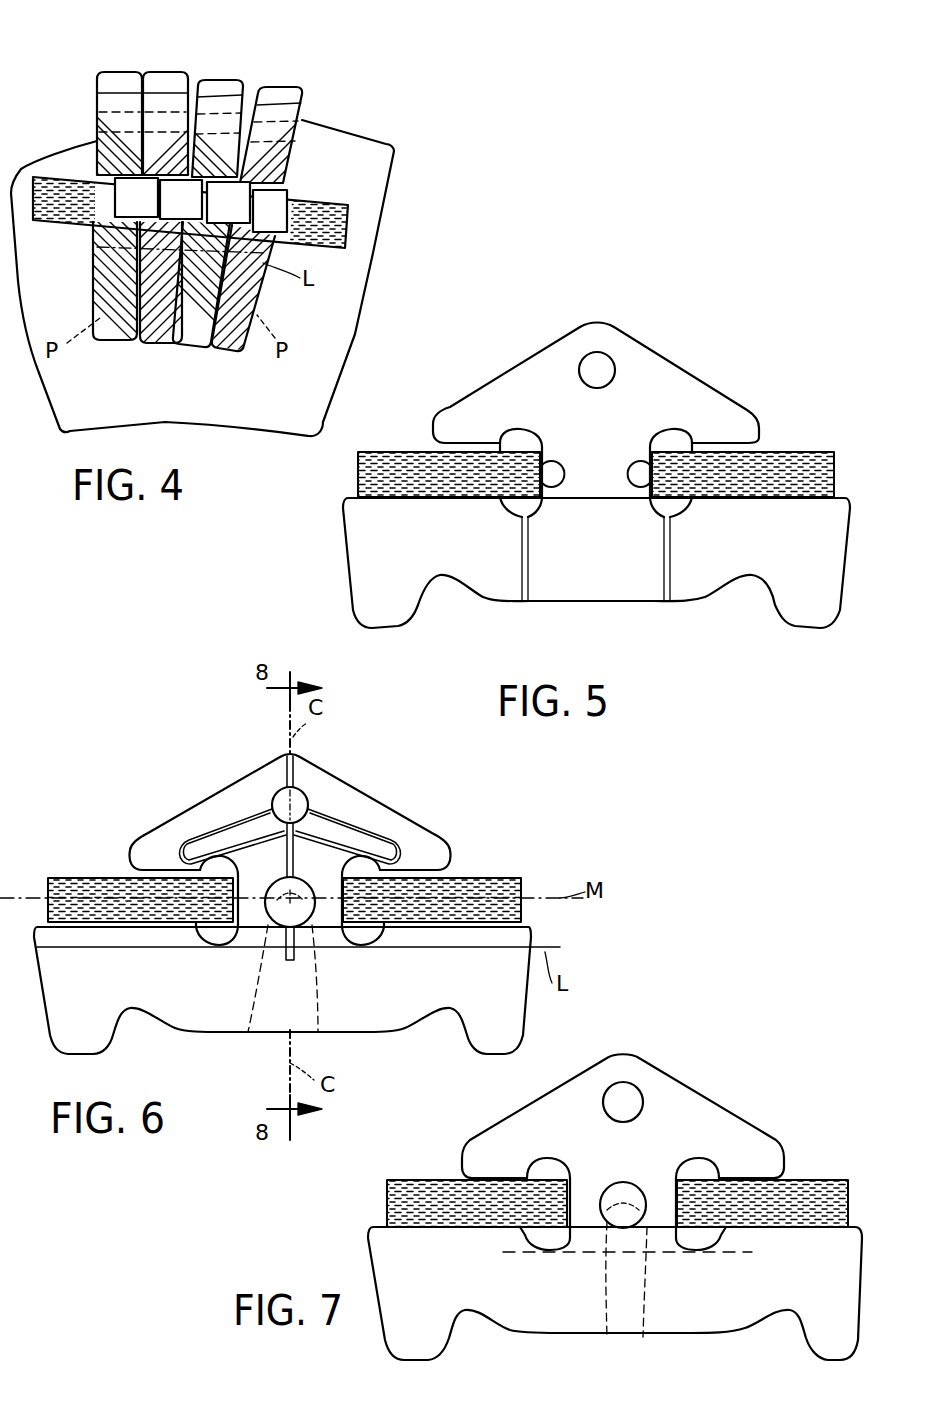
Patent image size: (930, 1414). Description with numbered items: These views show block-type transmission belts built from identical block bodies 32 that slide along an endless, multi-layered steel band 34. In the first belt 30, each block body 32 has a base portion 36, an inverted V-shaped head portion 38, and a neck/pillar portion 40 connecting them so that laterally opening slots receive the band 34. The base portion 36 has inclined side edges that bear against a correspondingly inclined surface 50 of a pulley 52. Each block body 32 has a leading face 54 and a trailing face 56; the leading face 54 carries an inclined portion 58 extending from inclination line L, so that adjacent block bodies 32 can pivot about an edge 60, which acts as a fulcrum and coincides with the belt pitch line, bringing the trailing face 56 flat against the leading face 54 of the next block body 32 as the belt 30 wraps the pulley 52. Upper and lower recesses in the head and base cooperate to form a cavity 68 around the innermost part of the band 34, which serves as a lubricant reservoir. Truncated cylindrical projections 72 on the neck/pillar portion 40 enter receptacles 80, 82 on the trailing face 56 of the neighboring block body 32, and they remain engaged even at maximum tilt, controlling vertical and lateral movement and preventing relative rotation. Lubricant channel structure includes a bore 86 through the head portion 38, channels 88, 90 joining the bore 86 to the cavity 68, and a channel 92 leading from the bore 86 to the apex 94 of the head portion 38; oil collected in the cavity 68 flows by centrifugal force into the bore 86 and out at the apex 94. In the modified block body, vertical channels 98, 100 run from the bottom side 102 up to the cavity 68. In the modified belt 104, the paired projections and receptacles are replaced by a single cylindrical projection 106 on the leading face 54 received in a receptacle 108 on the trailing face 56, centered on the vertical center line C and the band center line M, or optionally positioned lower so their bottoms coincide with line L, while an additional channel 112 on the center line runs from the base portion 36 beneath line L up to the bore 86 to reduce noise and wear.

In FIG. 4, the transmission belt 30 is at (382, 118).
In FIG. 4, the block body 32 is at (210, 80).
In FIG. 5, the block body 32 is at (595, 418).
In FIG. 6, the block body 32 is at (265, 892).
In FIG. 7, the block body 32 is at (672, 1095).
In FIG. 4, the endless band 34 is at (334, 207).
In FIG. 5, the endless band 34 is at (790, 452).
In FIG. 6, the endless band 34 is at (470, 880).
In FIG. 7, the endless band 34 is at (617, 1203).
In FIG. 5, the base portion 36 is at (478, 563).
In FIG. 6, the base portion 36 is at (358, 1000).
In FIG. 5, the head portion 38 is at (555, 403).
In FIG. 6, the head portion 38 is at (318, 783).
In FIG. 6, the neck/pillar portion 40 is at (403, 838).
In FIG. 4, the inclined surface 50 is at (366, 232).
In FIG. 4, the pulley 52 is at (332, 323).
In FIG. 4, the leading face 54 is at (136, 320).
In FIG. 6, the leading face 54 is at (151, 985).
In FIG. 4, the trailing face 56 is at (93, 292).
In FIG. 7, the trailing face 56 is at (502, 1275).
In FIG. 4, the inclined portion 58 is at (175, 320).
In FIG. 4, the edge 60 is at (97, 263).
In FIG. 5, the cavity 68 is at (507, 438).
In FIG. 6, the cavity 68 is at (375, 935).
In FIG. 4, the projection 72 is at (264, 192).
In FIG. 4, the receptacle 80 is at (104, 190).
In FIG. 5, the receptacle 80 is at (508, 437).
In FIG. 5, the receptacle 82 is at (645, 425).
In FIG. 6, the bore 86 is at (273, 797).
In FIG. 7, the bore 86 is at (612, 1092).
In FIG. 6, the channel 88 is at (330, 817).
In FIG. 6, the channel 90 is at (213, 823).
In FIG. 6, the channel 92 is at (295, 773).
In FIG. 6, the apex 94 is at (283, 770).
In FIG. 5, the vertical channel 98 is at (672, 580).
In FIG. 5, the vertical channel 100 is at (530, 580).
In FIG. 5, the bottom side 102 is at (597, 601).
In FIG. 6, the transmission belt 104 is at (412, 778).
In FIG. 7, the transmission belt 104 is at (782, 1103).
In FIG. 6, the projection 106 is at (265, 925).
In FIG. 7, the receptacle 108 is at (610, 1240).
In FIG. 6, the additional channel 112 is at (127, 857).